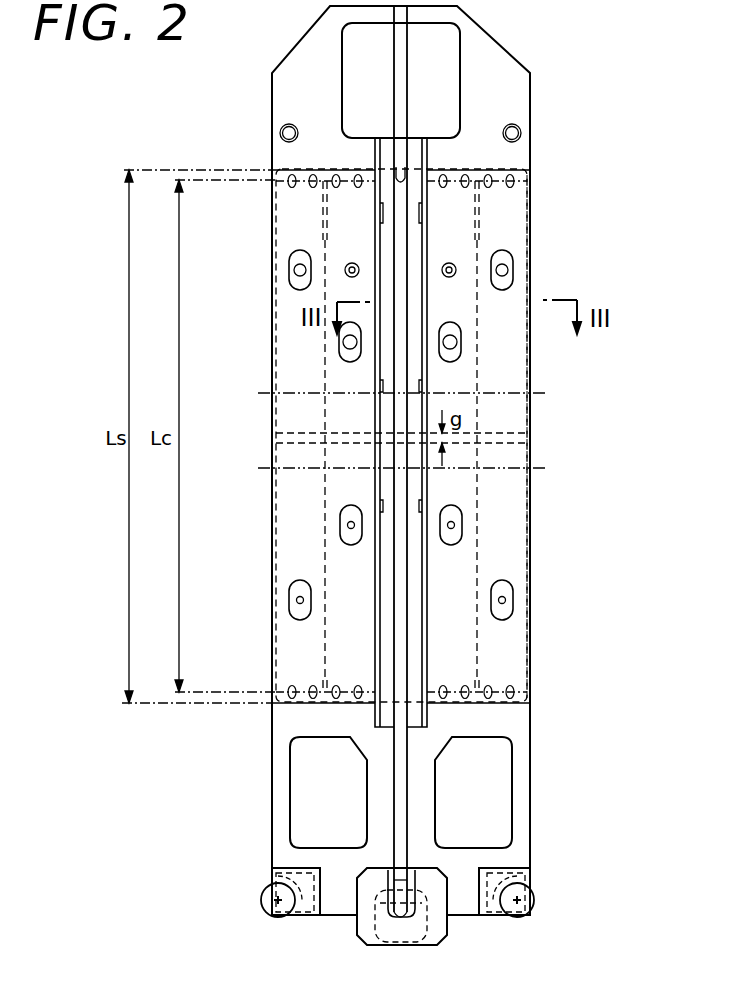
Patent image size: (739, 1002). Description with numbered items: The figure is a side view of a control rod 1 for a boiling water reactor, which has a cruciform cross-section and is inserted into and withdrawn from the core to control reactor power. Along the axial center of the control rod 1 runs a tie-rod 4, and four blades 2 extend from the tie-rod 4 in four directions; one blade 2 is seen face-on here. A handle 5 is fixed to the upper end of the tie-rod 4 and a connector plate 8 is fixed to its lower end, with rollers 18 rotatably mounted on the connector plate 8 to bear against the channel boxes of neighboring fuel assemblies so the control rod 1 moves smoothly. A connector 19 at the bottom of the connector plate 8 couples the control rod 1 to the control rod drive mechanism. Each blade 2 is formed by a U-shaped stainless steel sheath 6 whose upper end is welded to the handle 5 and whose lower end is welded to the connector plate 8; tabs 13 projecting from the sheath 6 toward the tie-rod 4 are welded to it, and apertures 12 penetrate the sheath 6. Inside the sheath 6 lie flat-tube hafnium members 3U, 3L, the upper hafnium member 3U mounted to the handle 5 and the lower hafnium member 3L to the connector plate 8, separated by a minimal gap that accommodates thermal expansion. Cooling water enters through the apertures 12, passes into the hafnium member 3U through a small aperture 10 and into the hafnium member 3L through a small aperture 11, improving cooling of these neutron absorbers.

The control rod 1 is at (560, 115).
The blade 2 is at (531, 533).
The hafnium member 3L is at (300, 443).
The hafnium member 3U is at (510, 432).
The tie-rod 4 is at (427, 150).
The handle 5 is at (493, 52).
The sheath 6 is at (531, 248).
The connector plate 8 is at (513, 780).
The aperture 10 is at (300, 268).
The aperture 11 is at (300, 598).
The aperture 12 is at (297, 290).
The tab 13 is at (423, 210).
The roller 18 is at (537, 893).
The connector 19 is at (447, 933).